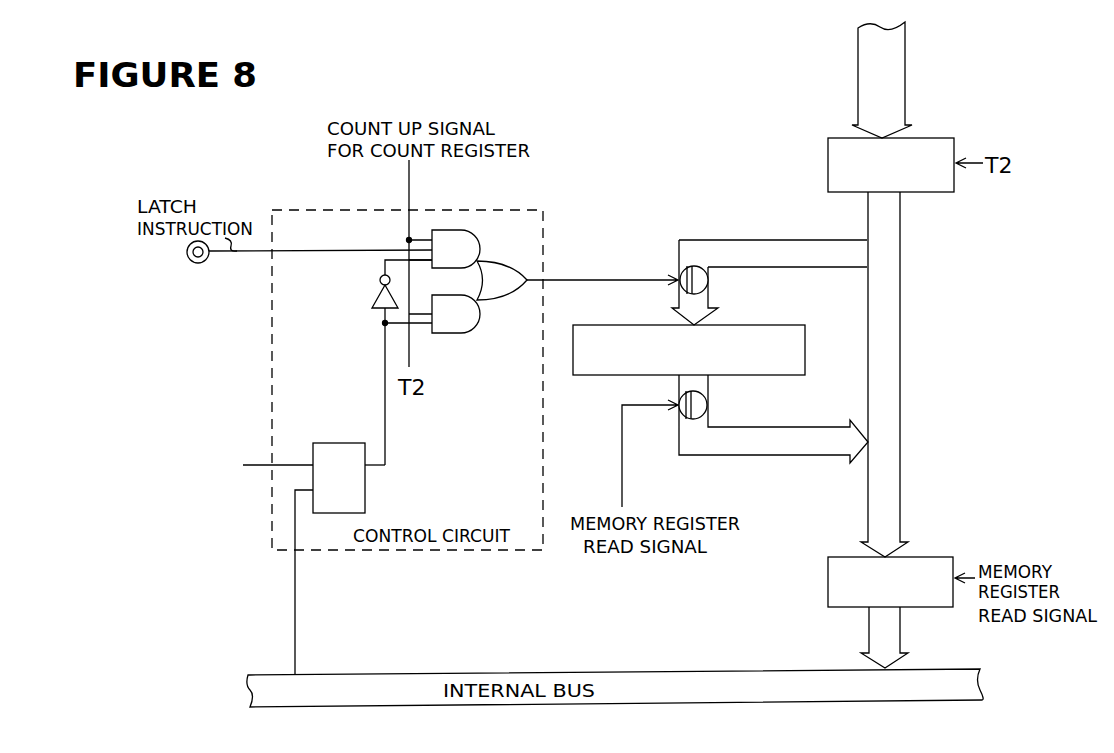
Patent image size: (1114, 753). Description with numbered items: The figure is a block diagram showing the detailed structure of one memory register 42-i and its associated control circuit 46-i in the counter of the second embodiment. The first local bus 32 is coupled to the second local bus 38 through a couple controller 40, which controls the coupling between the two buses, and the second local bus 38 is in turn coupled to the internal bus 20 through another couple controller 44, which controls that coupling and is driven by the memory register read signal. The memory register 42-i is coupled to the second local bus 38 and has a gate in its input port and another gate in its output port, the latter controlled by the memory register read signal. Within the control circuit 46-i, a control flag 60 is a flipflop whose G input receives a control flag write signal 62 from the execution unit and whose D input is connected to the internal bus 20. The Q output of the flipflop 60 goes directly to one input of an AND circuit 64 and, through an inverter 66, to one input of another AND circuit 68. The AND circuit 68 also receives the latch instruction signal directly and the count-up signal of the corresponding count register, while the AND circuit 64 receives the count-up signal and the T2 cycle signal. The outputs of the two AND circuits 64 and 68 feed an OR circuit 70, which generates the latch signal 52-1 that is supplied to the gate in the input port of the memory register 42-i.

The internal bus 20 is at (723, 672).
The first local bus 32 is at (906, 87).
The second local bus 38 is at (901, 355).
The couple controller 40 is at (826, 162).
The memory register 42-i is at (762, 325).
The couple controller 44 is at (925, 557).
The control circuit 46-i is at (367, 550).
The latch signal 52-1 is at (601, 280).
The control flag 60 is at (366, 493).
The control flag write signal 62 is at (258, 466).
The AND circuit 64 is at (478, 333).
The inverter 66 is at (368, 300).
The AND circuit 68 is at (478, 231).
The OR circuit 70 is at (521, 266).